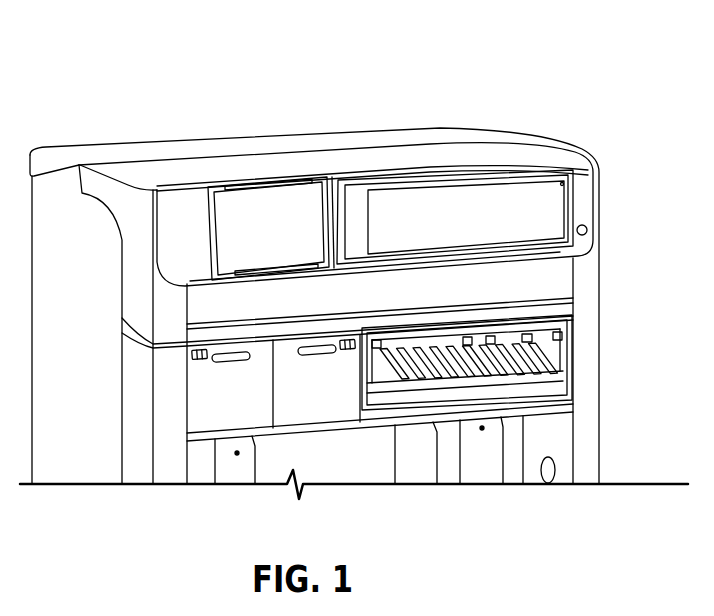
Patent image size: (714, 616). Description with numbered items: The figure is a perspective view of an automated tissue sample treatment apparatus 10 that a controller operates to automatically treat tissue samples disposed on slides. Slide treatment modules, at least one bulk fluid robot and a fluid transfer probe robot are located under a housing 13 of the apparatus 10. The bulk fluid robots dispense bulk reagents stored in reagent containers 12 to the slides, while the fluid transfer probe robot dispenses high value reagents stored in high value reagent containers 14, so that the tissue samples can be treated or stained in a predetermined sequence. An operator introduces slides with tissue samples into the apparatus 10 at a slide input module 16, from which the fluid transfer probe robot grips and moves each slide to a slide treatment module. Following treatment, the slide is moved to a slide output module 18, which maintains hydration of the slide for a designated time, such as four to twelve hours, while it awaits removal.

The automated tissue sample treatment apparatus 10 is at (133, 88).
The reagent containers 12 is at (408, 460).
The housing 13 is at (479, 223).
The high value reagent containers 14 is at (530, 347).
The slide input module 16 is at (245, 407).
The slide output module 18 is at (325, 398).